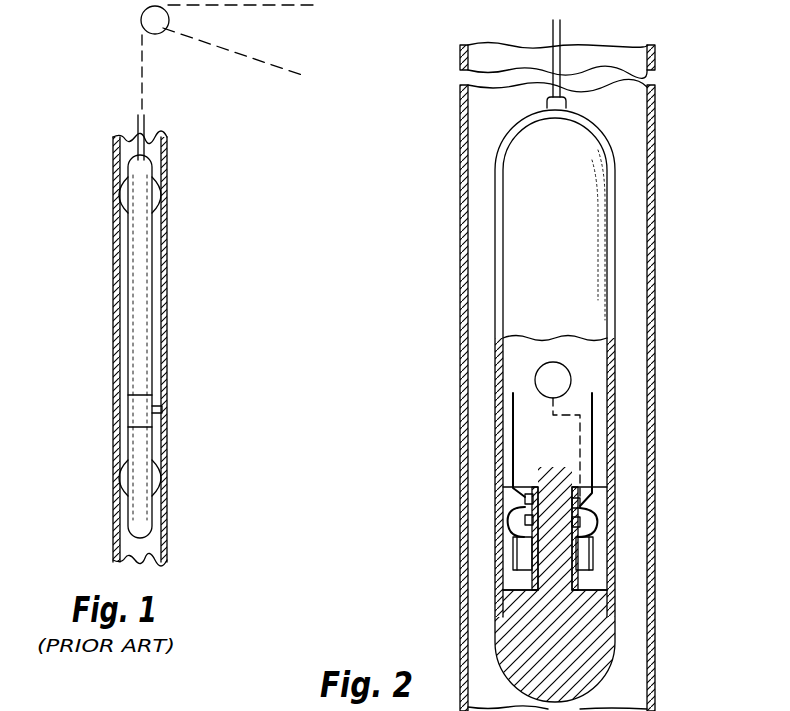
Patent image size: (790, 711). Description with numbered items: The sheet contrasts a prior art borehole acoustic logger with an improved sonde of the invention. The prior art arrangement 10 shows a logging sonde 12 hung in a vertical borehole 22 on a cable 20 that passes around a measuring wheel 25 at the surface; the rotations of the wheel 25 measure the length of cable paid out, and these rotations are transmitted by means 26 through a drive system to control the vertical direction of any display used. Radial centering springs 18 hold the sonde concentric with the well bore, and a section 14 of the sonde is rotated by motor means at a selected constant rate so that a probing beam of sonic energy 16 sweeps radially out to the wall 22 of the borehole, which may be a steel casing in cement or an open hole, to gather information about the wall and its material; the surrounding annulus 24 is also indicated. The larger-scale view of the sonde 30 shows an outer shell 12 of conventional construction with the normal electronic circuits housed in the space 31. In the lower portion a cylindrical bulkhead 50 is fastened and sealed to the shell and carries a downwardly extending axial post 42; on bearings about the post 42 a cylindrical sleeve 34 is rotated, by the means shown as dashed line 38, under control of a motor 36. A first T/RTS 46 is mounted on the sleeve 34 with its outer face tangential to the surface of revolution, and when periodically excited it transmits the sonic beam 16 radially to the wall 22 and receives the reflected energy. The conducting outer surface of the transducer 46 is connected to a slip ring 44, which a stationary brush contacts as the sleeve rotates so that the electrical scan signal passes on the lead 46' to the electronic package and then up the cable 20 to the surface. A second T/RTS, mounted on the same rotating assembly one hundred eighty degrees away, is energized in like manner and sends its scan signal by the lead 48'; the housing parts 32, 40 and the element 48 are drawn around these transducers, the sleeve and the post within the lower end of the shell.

In FIG. 1, the prior art arrangement 10 is at (170, 165).
In FIG. 1, the logging sonde 12 is at (145, 292).
In FIG. 2, the logging sonde 12 is at (614, 150).
In FIG. 1, the rotating section of sonde 14 is at (150, 403).
In FIG. 1, the probing beam of sonic energy 16 is at (162, 412).
In FIG. 2, the probing beam of sonic energy 16 is at (517, 562).
In FIG. 1, the centering springs 18 is at (163, 197).
In FIG. 1, the cable 20 is at (270, 8).
In FIG. 2, the cable 20 is at (562, 33).
In FIG. 1, the borehole wall 22 is at (118, 283).
In FIG. 2, the borehole wall 22 is at (657, 250).
In FIG. 1, the well bore 24 is at (89, 357).
In FIG. 2, the well bore 24 is at (434, 285).
In FIG. 1, the measuring wheel 25 is at (153, 22).
In FIG. 1, the transmitting means 26 is at (247, 58).
In FIG. 2, the sonde 30 is at (621, 206).
In FIG. 2, the electronic package space 31 is at (561, 287).
In FIG. 2, the left sleeve housing 32 is at (505, 545).
In FIG. 2, the rotating sleeve 34 is at (577, 585).
In FIG. 2, the motor 36 is at (573, 380).
In FIG. 2, the drive means 38 is at (582, 418).
In FIG. 2, the right sleeve housing 40 is at (613, 507).
In FIG. 2, the axial post 42 is at (560, 592).
In FIG. 2, the slip ring 44 is at (520, 508).
In FIG. 2, the first T/RTS 46 is at (608, 557).
In FIG. 2, the lead 46' is at (643, 449).
In FIG. 2, the left block 48 is at (466, 587).
In FIG. 2, the lead 48' is at (465, 445).
In FIG. 2, the cylindrical bulkhead 50 is at (527, 457).